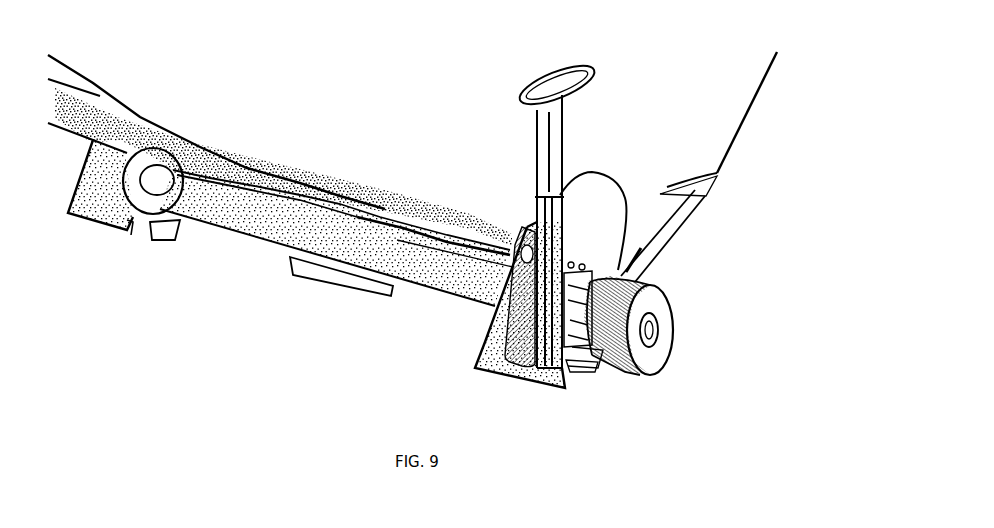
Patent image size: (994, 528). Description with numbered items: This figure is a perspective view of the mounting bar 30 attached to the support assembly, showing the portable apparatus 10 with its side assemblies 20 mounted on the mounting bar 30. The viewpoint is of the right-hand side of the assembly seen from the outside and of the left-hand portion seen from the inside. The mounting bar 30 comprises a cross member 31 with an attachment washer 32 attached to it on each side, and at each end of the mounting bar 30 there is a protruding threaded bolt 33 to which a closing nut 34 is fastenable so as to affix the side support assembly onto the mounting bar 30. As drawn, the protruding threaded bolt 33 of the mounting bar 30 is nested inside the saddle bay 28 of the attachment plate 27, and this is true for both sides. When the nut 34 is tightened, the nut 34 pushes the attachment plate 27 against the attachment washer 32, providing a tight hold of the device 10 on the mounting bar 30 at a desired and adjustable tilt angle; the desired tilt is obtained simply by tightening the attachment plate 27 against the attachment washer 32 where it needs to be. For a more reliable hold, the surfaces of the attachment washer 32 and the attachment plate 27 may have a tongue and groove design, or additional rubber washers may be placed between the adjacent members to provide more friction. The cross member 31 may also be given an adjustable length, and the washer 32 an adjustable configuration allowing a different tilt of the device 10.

The portable apparatus 10 is at (757, 137).
The side assembly 20 is at (683, 260).
The attachment plate 27 is at (87, 212).
The saddle bay 28 is at (147, 237).
The mounting bar 30 is at (377, 340).
The cross member 31 is at (273, 220).
The attachment washer 32 is at (133, 200).
The protruding threaded bolt 33 is at (576, 338).
The closing nut 34 is at (647, 362).